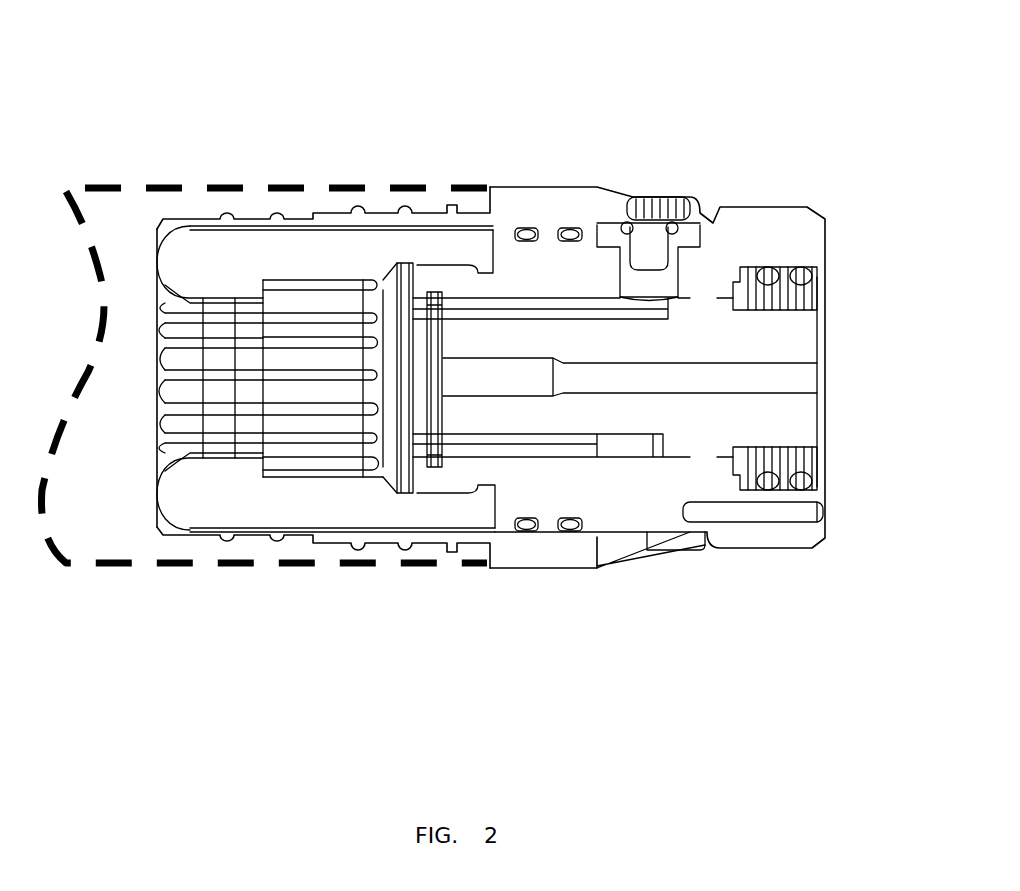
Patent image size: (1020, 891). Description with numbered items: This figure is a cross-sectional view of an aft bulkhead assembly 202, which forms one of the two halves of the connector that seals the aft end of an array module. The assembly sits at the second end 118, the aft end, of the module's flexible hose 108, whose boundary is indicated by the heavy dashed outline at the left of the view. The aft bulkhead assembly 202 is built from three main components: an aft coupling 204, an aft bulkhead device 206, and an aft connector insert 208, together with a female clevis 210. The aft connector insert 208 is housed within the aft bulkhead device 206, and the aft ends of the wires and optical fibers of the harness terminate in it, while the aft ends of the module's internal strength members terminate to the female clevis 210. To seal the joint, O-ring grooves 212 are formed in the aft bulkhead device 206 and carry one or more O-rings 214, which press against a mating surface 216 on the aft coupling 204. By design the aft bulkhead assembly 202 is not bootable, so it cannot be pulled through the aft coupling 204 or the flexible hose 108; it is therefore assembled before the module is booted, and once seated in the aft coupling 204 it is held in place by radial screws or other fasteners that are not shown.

The aft bulkhead assembly 202 is at (118, 107).
The aft coupling 204 is at (338, 217).
The aft bulkhead device 206 is at (785, 208).
The aft connector insert 208 is at (803, 328).
The female clevis 210 is at (193, 267).
The O-ring grooves 212 is at (533, 230).
The O-rings 214 is at (524, 228).
The mating surface 216 is at (548, 522).
The flexible hose 108 is at (217, 567).
The second end 118 is at (322, 626).